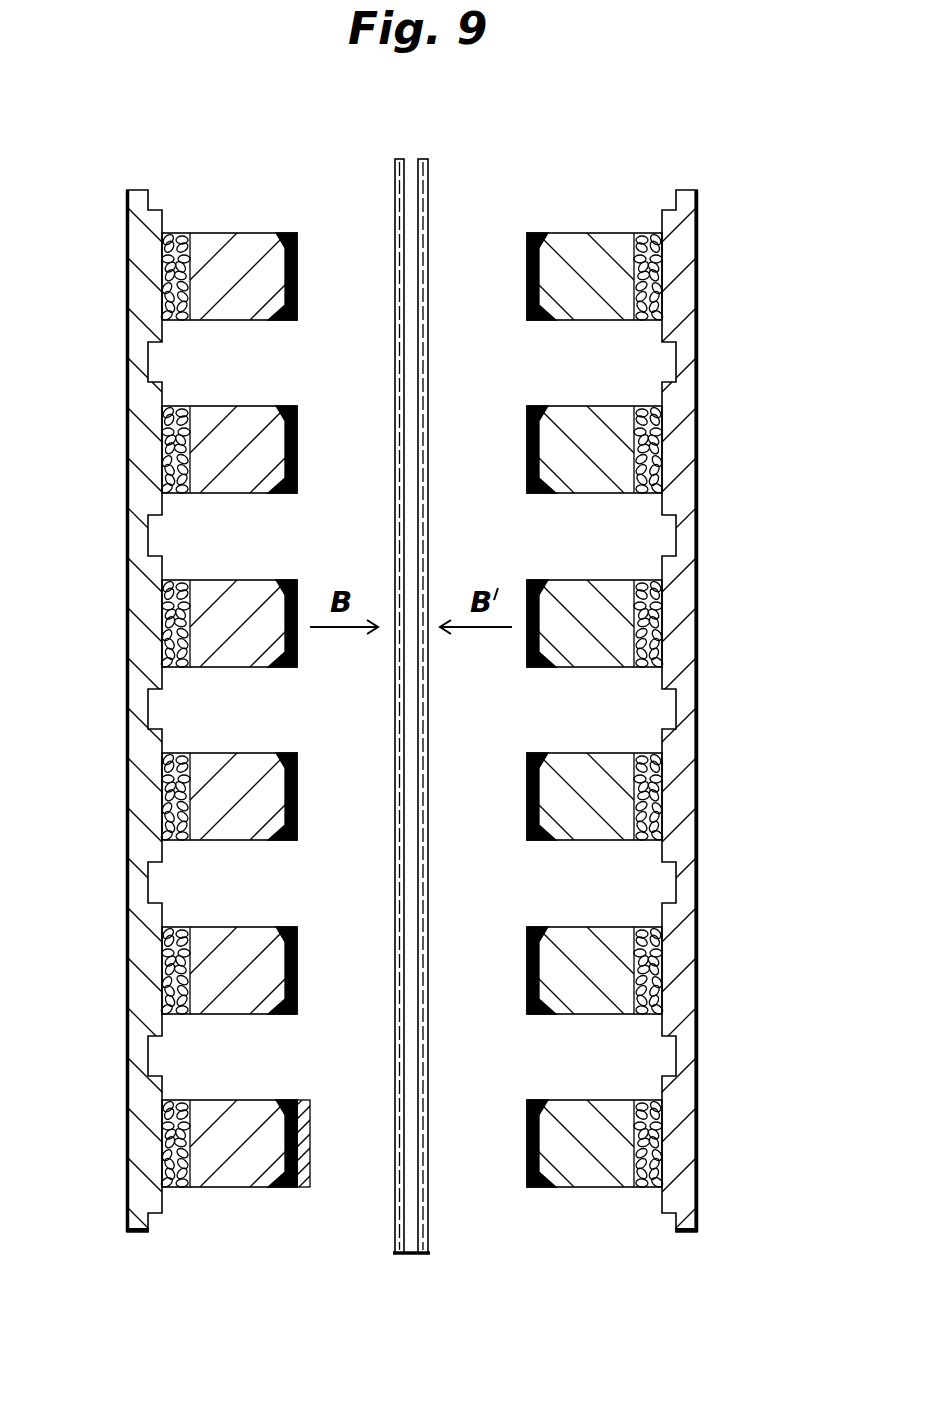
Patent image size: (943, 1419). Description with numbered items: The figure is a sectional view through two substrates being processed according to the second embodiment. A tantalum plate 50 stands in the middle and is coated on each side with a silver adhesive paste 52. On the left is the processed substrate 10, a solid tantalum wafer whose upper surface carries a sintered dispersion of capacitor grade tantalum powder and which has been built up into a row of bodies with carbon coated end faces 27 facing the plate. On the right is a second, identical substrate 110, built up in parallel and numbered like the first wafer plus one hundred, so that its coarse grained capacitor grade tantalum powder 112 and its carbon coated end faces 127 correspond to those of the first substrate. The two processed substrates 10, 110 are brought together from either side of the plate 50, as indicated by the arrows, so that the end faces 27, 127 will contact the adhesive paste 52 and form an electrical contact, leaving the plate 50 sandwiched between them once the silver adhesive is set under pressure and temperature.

The substrate 10 is at (188, 705).
The carbon coated end face 27 is at (277, 233).
The tantalum plate 50 is at (409, 166).
The silver adhesive paste 52 is at (395, 1251).
The second substrate 110 is at (650, 705).
The coarse grained capacitor grade tantalum powder 112 is at (657, 443).
The carbon coated end face 127 is at (541, 235).